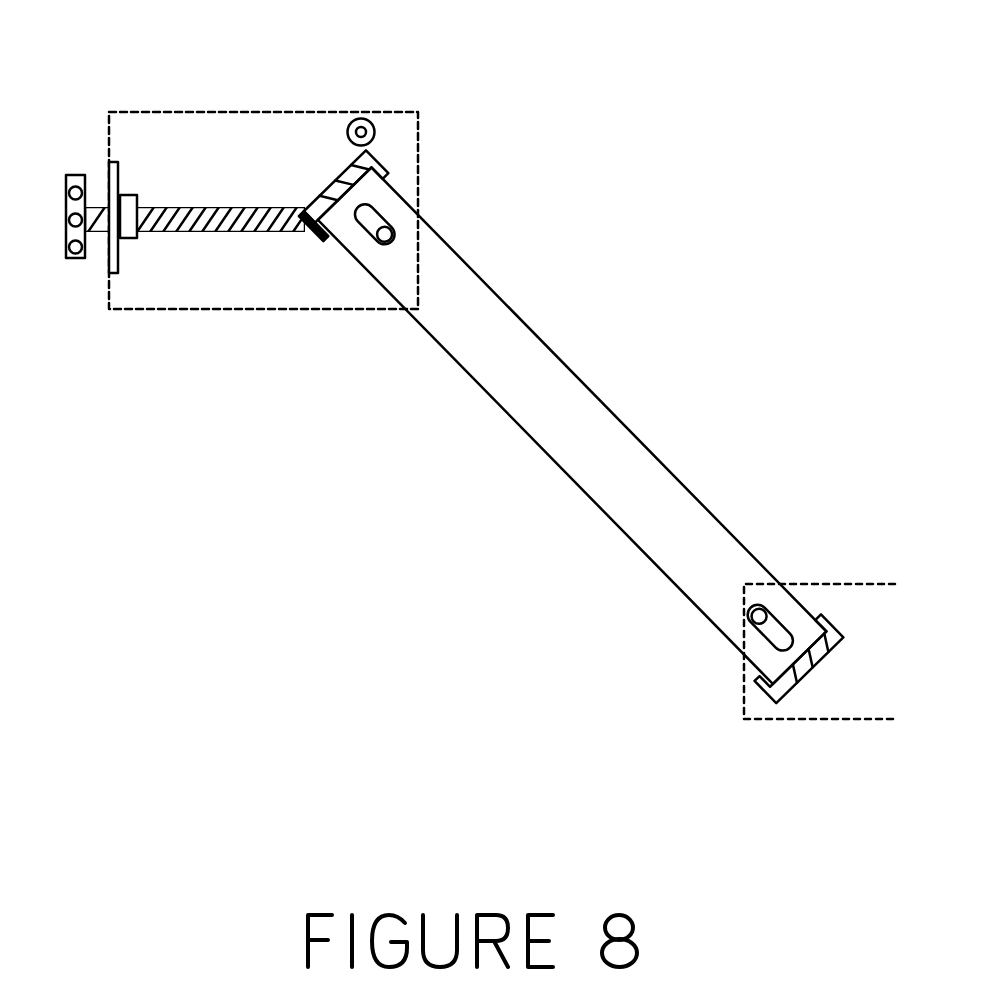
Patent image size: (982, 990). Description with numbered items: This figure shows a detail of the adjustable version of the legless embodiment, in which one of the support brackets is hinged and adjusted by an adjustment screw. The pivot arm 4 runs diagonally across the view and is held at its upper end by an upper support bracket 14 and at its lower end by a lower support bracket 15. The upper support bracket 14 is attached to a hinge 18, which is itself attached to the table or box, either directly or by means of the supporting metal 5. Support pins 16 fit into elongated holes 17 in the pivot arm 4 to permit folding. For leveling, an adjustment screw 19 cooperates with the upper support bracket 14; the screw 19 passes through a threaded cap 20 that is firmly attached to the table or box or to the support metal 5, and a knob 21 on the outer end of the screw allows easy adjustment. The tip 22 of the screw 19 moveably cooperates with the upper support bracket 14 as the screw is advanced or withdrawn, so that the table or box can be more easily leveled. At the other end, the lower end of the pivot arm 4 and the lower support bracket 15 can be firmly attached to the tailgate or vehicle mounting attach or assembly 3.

The tailgate or vehicle mounting attach or assembly 3 is at (820, 723).
The pivot arm 4 is at (498, 283).
The supporting metal 5 is at (147, 318).
The upper support bracket 14 is at (332, 170).
The lower support bracket 15 is at (842, 613).
The support pin 16 is at (381, 229).
The elongated hole 17 is at (363, 208).
The hinge 18 is at (365, 121).
The adjustment screw 19 is at (265, 240).
The threaded cap 20 is at (128, 187).
The knob 21 is at (75, 268).
The tip 22 is at (305, 242).